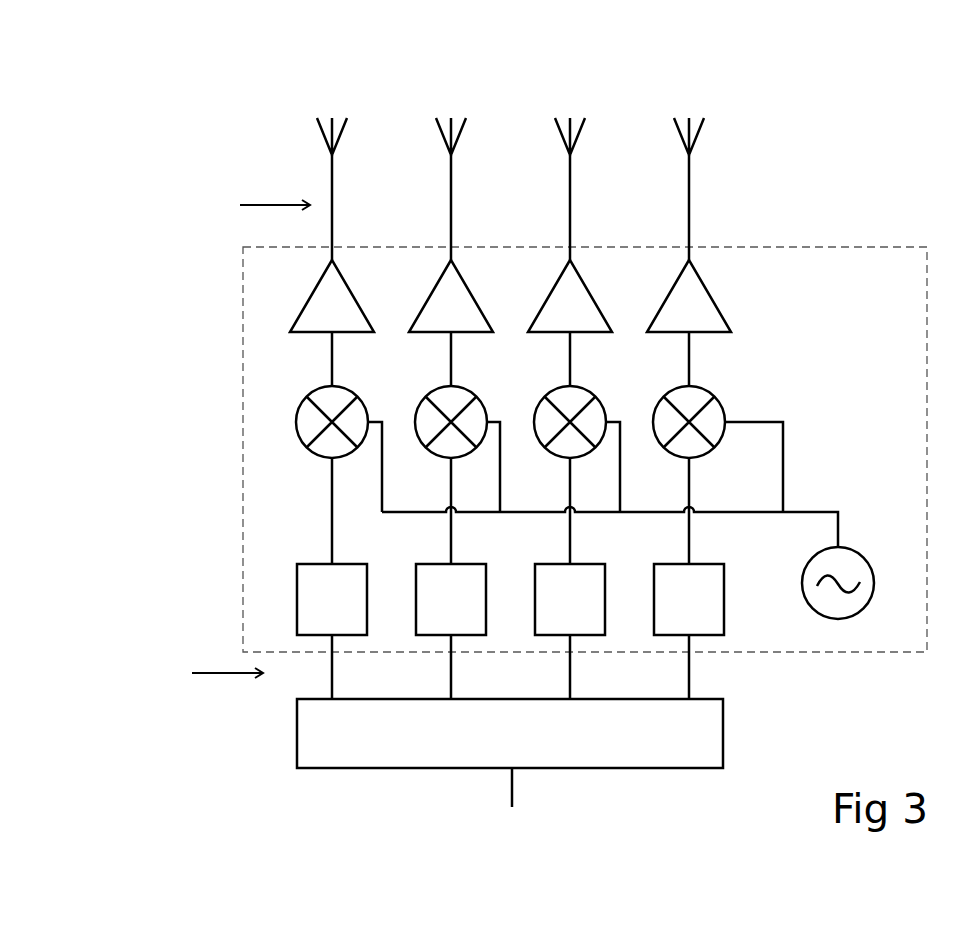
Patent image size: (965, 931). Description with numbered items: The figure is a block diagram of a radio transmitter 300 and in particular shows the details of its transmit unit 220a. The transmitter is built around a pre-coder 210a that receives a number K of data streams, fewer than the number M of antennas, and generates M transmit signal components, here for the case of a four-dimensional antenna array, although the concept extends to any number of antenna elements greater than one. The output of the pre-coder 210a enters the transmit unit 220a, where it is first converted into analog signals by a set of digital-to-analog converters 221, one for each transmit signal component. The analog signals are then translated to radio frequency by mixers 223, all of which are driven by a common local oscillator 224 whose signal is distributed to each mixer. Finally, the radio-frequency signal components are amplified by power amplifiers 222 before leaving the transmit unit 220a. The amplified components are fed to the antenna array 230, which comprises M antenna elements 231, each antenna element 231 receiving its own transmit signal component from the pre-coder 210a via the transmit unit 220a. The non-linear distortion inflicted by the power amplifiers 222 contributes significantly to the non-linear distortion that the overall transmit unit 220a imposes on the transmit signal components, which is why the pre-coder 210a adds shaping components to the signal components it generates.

The radio transmitter 300 is at (63, 85).
The pre-coder 210a is at (510, 753).
The transmit unit 220a is at (585, 408).
The digital-to-analog converter 221 is at (510, 599).
The power amplifier 222 is at (475, 272).
The mixer 223 is at (567, 448).
The local oscillator 224 is at (853, 560).
The antenna array 230 is at (555, 91).
The antenna element 231 is at (726, 102).